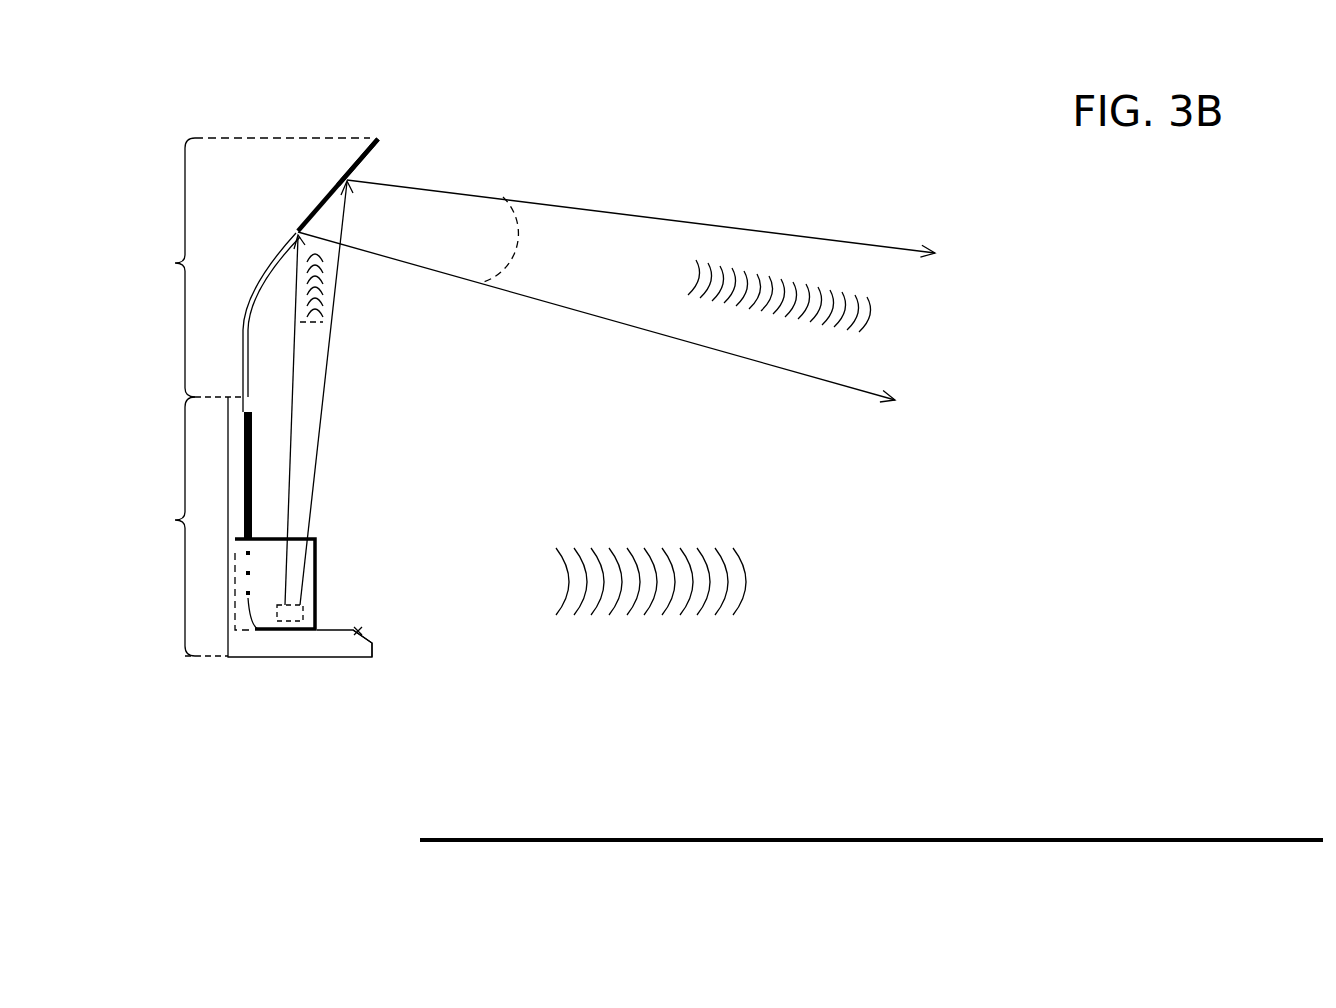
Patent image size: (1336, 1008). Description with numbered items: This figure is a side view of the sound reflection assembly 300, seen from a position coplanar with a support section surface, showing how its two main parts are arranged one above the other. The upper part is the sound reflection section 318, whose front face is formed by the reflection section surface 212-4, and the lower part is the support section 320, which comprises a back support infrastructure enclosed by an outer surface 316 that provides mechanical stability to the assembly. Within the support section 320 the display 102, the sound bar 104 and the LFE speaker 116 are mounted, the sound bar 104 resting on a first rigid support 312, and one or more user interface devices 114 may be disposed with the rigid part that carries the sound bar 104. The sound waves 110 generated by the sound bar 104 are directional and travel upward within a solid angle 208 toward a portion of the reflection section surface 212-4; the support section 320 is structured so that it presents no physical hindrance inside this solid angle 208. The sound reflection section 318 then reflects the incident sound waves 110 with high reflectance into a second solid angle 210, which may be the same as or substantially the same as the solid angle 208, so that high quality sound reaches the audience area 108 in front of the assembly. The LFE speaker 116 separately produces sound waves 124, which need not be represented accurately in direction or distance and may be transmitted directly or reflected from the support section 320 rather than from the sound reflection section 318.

The sound reflection assembly 300 is at (340, 180).
The reflection section surface 212-4 is at (365, 150).
The second solid angle 210 is at (518, 222).
The sound waves 110 is at (320, 273).
The solid angle 208 is at (323, 323).
The sound reflection section 318 is at (175, 263).
The support section 320 is at (175, 520).
The display 102 is at (243, 458).
The LFE speaker 116 is at (313, 597).
The sound bar 104 is at (297, 617).
The user interface devices 114 is at (363, 632).
The first rigid support 312 is at (377, 648).
The outer surface 316 is at (233, 643).
The sound waves 124 is at (658, 549).
The audience area 108 is at (1175, 840).